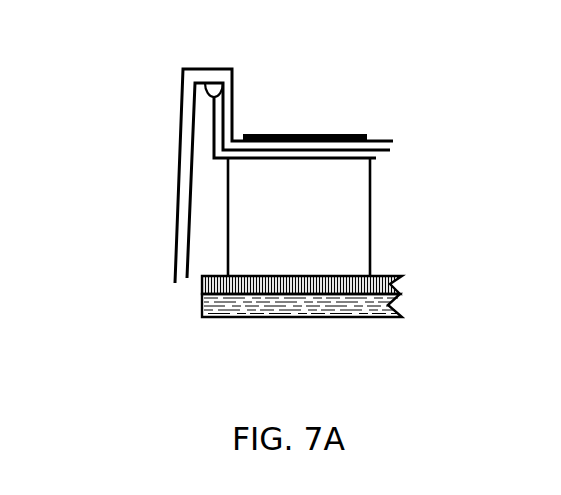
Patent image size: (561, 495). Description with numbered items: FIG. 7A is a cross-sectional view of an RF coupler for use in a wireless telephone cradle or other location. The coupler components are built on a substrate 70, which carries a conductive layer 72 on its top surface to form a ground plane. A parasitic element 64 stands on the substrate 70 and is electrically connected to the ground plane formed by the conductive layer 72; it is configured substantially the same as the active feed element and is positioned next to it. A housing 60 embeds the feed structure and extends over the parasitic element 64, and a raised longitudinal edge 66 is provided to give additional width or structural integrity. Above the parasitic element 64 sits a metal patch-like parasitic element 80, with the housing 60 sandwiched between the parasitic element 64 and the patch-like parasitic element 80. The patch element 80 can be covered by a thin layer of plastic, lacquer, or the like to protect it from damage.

The housing 60 is at (168, 108).
The parasitic element 64 is at (372, 203).
The raised longitudinal edge 66 is at (232, 97).
The substrate 70 is at (390, 307).
The conductive layer 72 is at (393, 290).
The patch-like parasitic element 80 is at (375, 135).